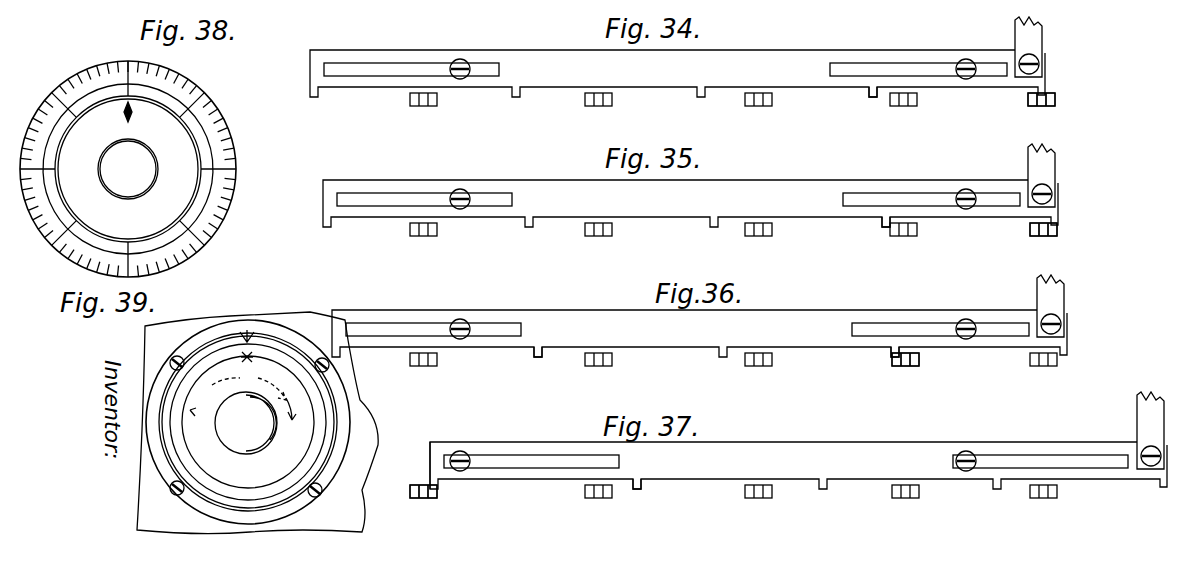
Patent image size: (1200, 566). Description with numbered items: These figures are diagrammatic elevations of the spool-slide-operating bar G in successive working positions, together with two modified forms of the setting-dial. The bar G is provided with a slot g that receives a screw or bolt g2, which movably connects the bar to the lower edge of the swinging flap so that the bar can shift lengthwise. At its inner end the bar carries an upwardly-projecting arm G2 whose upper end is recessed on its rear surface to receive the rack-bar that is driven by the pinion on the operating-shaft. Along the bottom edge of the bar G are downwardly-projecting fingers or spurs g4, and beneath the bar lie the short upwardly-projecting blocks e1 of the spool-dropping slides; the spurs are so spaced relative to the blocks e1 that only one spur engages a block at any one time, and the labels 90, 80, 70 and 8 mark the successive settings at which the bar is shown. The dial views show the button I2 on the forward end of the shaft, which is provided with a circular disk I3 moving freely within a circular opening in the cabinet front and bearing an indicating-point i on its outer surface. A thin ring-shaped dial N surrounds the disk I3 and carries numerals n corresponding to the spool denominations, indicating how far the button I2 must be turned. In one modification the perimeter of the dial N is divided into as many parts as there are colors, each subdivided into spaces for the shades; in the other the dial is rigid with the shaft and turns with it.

In FIG. 34, the bar G is at (677, 73).
In FIG. 35, the bar G is at (690, 203).
In FIG. 36, the bar G is at (699, 333).
In FIG. 37, the bar G is at (798, 465).
In FIG. 34, the upwardly-projecting arm G2 is at (1030, 47).
In FIG. 35, the upwardly-projecting arm G2 is at (1046, 170).
In FIG. 36, the upwardly-projecting arm G2 is at (1055, 302).
In FIG. 37, the upwardly-projecting arm G2 is at (1138, 418).
In FIG. 34, the slot g is at (860, 66).
In FIG. 35, the slot g is at (858, 200).
In FIG. 36, the slot g is at (936, 330).
In FIG. 37, the slot g is at (1005, 460).
In FIG. 34, the screw or bolt g2 is at (462, 60).
In FIG. 35, the screw or bolt g2 is at (462, 190).
In FIG. 36, the screw or bolt g2 is at (462, 320).
In FIG. 37, the screw or bolt g2 is at (462, 452).
In FIG. 34, the downwardly-projecting finger or spur g4 is at (874, 100).
In FIG. 35, the downwardly-projecting finger or spur g4 is at (886, 230).
In FIG. 36, the downwardly-projecting finger or spur g4 is at (538, 360).
In FIG. 37, the downwardly-projecting finger or spur g4 is at (428, 478).
In FIG. 34, the upwardly-projecting block e1 is at (1075, 99).
In FIG. 35, the upwardly-projecting block e1 is at (913, 246).
In FIG. 36, the upwardly-projecting block e1 is at (628, 368).
In FIG. 37, the upwardly-projecting block e1 is at (445, 510).
In FIG. 34, the position 90 is at (1045, 108).
In FIG. 35, the position 80 is at (1058, 230).
In FIG. 36, the position 70 is at (895, 368).
In FIG. 37, the position 8 is at (438, 497).
In FIG. 38, the ring-shaped dial N is at (222, 106).
In FIG. 39, the ring-shaped dial N is at (292, 448).
In FIG. 38, the numerals n is at (222, 228).
In FIG. 38, the indicating-point i is at (132, 112).
In FIG. 39, the indicating-point i is at (252, 337).
In FIG. 38, the button I2 is at (158, 169).
In FIG. 39, the button I2 is at (246, 452).
In FIG. 38, the circular disk I3 is at (128, 169).